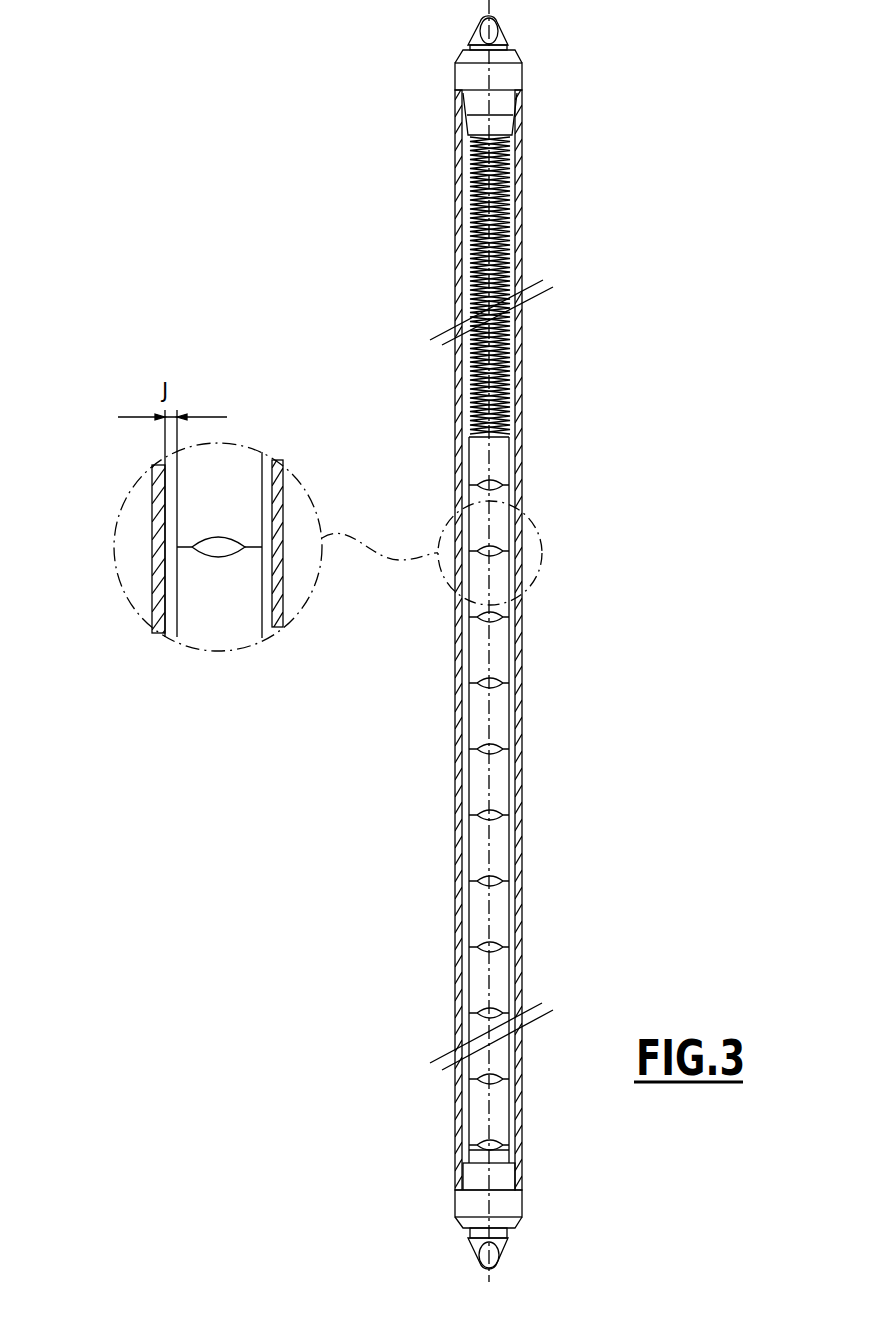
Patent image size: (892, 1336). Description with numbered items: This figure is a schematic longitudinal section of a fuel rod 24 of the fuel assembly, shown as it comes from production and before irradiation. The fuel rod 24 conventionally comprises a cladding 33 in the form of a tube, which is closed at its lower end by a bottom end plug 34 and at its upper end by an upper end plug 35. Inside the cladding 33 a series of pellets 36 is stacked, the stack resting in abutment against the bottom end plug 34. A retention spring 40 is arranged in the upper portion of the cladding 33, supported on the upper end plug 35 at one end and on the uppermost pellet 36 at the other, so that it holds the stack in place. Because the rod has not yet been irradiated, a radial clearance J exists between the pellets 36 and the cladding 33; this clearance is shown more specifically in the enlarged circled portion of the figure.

The fuel rod 24 is at (378, 641).
The cladding 33 is at (520, 860).
The bottom end plug 34 is at (508, 1207).
The upper end plug 35 is at (508, 78).
The pellets 36 is at (500, 658).
The retention spring 40 is at (500, 263).